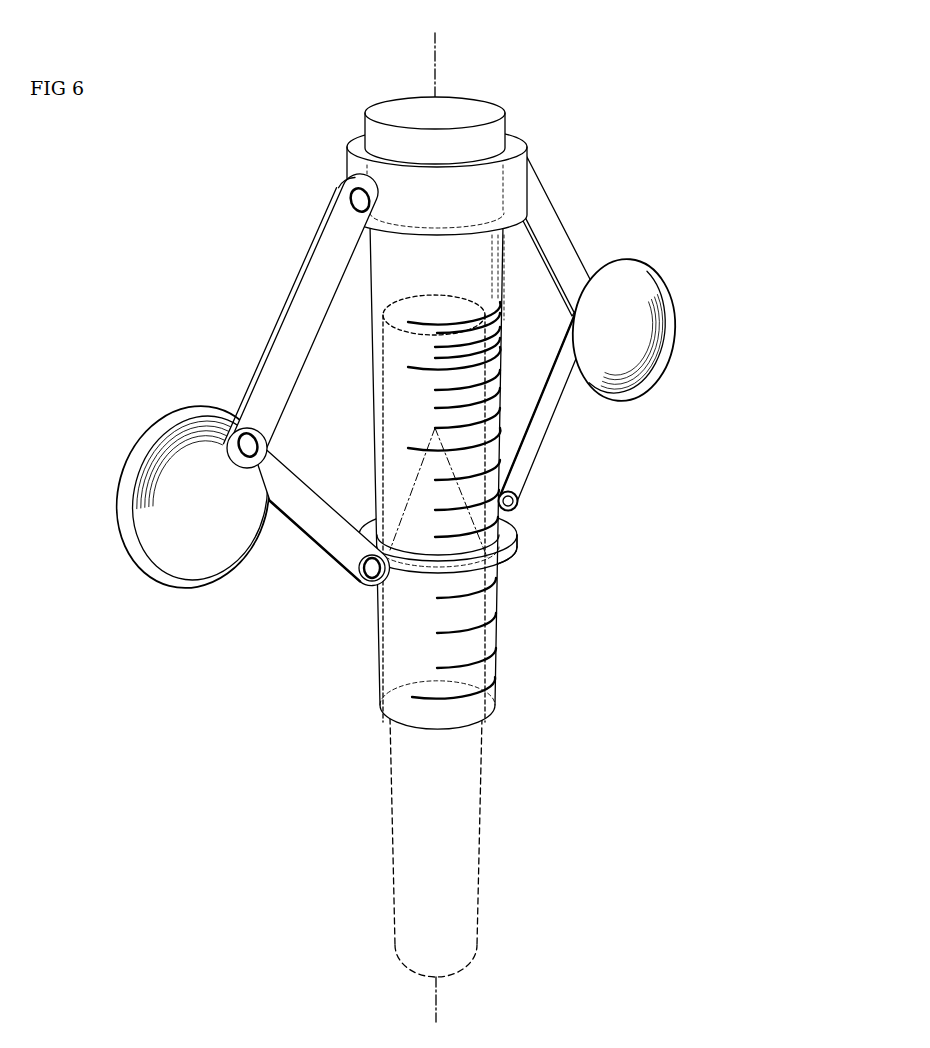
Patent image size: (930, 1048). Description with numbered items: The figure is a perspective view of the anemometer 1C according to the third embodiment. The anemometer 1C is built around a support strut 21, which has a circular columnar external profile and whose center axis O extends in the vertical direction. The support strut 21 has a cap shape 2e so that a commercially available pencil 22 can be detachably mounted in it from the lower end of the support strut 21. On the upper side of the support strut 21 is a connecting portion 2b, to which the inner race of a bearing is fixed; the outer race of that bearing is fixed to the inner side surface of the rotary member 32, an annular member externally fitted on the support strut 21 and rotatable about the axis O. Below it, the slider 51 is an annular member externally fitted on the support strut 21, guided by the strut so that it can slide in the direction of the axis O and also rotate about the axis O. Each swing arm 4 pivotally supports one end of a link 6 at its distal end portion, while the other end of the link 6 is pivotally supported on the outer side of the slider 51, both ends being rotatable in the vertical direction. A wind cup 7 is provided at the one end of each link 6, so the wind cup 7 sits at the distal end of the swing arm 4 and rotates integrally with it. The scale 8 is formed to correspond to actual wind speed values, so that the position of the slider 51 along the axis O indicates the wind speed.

The anemometer 1C is at (508, 49).
The axis O is at (434, 74).
The connecting portion 2b is at (462, 194).
The cap shape 2e is at (382, 348).
The swing arm 4 is at (308, 300).
The link 6 is at (330, 533).
The wind cup 7 is at (150, 432).
The scale 8 is at (477, 594).
The support strut 21 is at (373, 428).
The pencil 22 is at (462, 843).
The rotary member 32 is at (352, 138).
The slider 51 is at (510, 520).